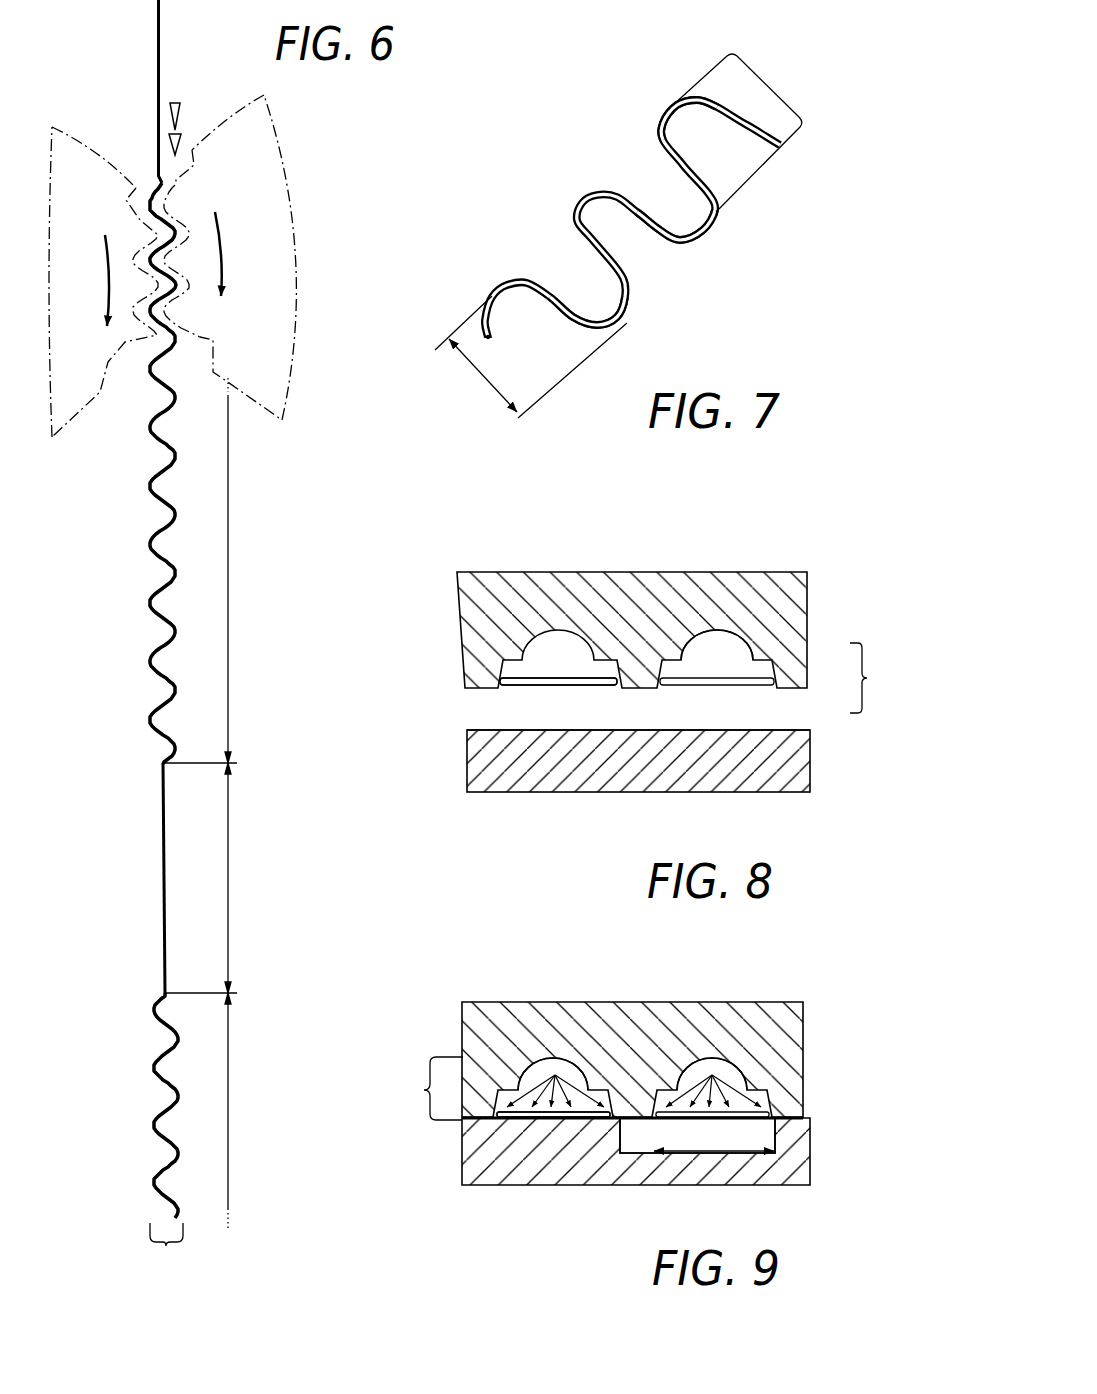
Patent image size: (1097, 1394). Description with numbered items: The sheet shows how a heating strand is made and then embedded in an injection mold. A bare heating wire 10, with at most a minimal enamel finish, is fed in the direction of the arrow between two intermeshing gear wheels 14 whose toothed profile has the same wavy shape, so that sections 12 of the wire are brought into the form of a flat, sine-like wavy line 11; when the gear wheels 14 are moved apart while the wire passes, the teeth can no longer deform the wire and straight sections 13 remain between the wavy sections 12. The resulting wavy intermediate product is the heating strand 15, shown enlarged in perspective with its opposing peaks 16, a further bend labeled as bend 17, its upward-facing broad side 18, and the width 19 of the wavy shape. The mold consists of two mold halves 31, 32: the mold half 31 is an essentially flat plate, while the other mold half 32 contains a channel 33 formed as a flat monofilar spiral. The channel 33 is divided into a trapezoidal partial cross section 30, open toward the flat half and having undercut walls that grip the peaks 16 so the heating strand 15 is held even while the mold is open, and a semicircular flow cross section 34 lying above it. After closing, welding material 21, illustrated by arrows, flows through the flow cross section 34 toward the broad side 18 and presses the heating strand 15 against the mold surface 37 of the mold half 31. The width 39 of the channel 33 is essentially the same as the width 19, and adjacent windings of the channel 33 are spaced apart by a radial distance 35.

In FIG. 6, the heating wire 10 is at (160, 32).
In FIG. 7, the heating wire 10 is at (491, 339).
In FIG. 6, the wavy line 11 is at (152, 555).
In FIG. 7, the wavy line 11 is at (767, 78).
In FIG. 6, the wavy sections 12 is at (230, 578).
In FIG. 6, the straight sections 13 is at (229, 882).
In FIG. 6, the gear wheels 14 is at (81, 167).
In FIG. 6, the heating strand 15 is at (166, 1247).
In FIG. 7, the heating strand 15 is at (585, 150).
In FIG. 8, the heating strand 15 is at (527, 685).
In FIG. 9, the heating strand 15 is at (510, 1121).
In FIG. 7, the peaks 16 is at (619, 322).
In FIG. 7, the bend 17 is at (699, 242).
In FIG. 8, the bend 17 is at (553, 688).
In FIG. 9, the bend 17 is at (556, 1121).
In FIG. 7, the broad side 18 is at (675, 108).
In FIG. 9, the broad side 18 is at (753, 1078).
In FIG. 7, the width of the wavy shape 19 is at (482, 380).
In FIG. 9, the welding material 21 is at (555, 1075).
In FIG. 8, the partial cross section 30 is at (673, 674).
In FIG. 8, the mold half 31 is at (490, 762).
In FIG. 9, the mold half 31 is at (795, 1158).
In FIG. 8, the mold half 32 is at (483, 604).
In FIG. 9, the mold half 32 is at (785, 1035).
In FIG. 8, the channel 33 is at (869, 678).
In FIG. 9, the channel 33 is at (421, 1090).
In FIG. 8, the flow cross section 34 is at (714, 653).
In FIG. 9, the flow cross section 34 is at (568, 1075).
In FIG. 9, the radial distance 35 is at (637, 1154).
In FIG. 8, the mold surface 37 is at (705, 732).
In FIG. 9, the mold surface 37 is at (737, 1111).
In FIG. 9, the width of the channel 39 is at (693, 1154).